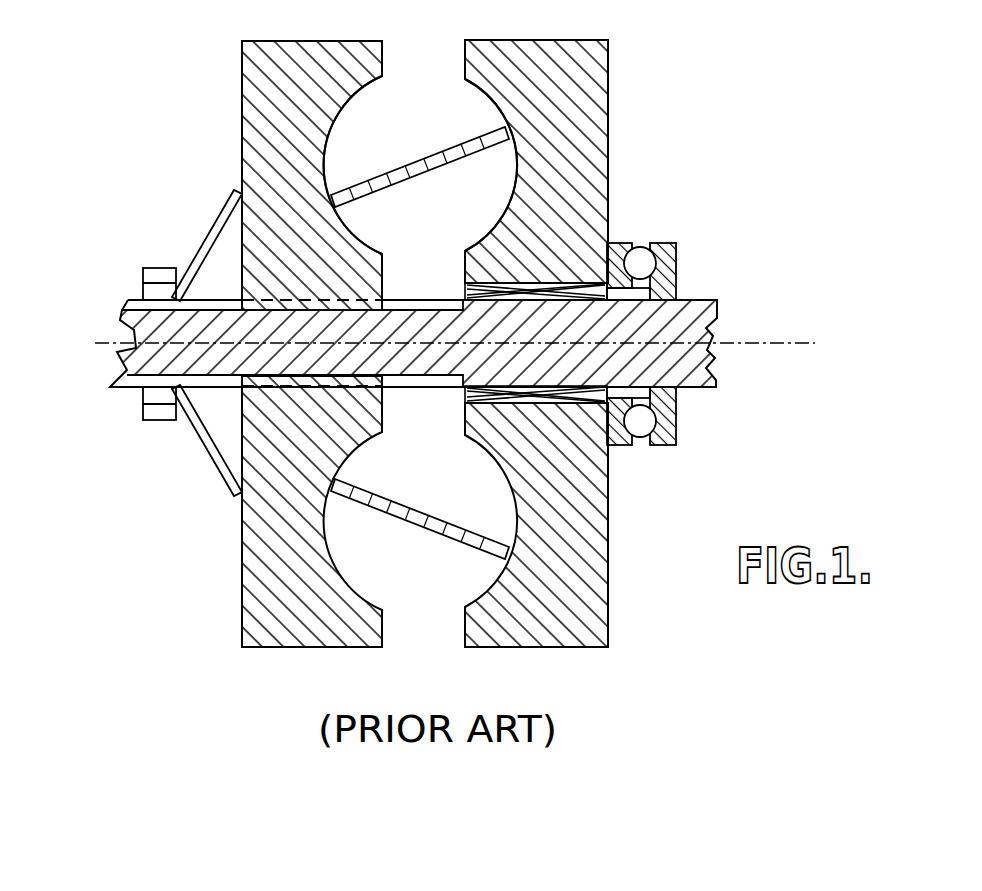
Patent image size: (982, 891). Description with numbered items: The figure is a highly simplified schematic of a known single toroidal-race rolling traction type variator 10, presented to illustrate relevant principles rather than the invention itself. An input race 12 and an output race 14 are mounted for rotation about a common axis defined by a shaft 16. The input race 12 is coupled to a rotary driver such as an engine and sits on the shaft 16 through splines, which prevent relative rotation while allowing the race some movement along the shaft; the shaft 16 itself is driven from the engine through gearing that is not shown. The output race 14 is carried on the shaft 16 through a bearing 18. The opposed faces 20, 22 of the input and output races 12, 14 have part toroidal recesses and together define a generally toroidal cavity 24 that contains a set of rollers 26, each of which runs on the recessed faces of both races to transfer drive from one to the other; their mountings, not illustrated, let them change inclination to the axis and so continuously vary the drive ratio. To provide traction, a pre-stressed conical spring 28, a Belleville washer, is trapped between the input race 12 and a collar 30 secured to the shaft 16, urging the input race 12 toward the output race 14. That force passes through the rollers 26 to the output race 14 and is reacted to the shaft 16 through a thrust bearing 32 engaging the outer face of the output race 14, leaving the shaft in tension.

The variator 10 is at (630, 181).
The input race 12 is at (283, 110).
The output race 14 is at (557, 103).
The shaft 16 is at (163, 377).
The bearing 18 is at (552, 396).
The opposed face of input race 20 is at (345, 135).
The opposed face of output race 22 is at (478, 100).
The toroidal cavity 24 is at (442, 238).
The rollers 26 is at (413, 172).
The conical spring 28 is at (197, 438).
The collar 30 is at (167, 267).
The thrust bearing 32 is at (676, 410).